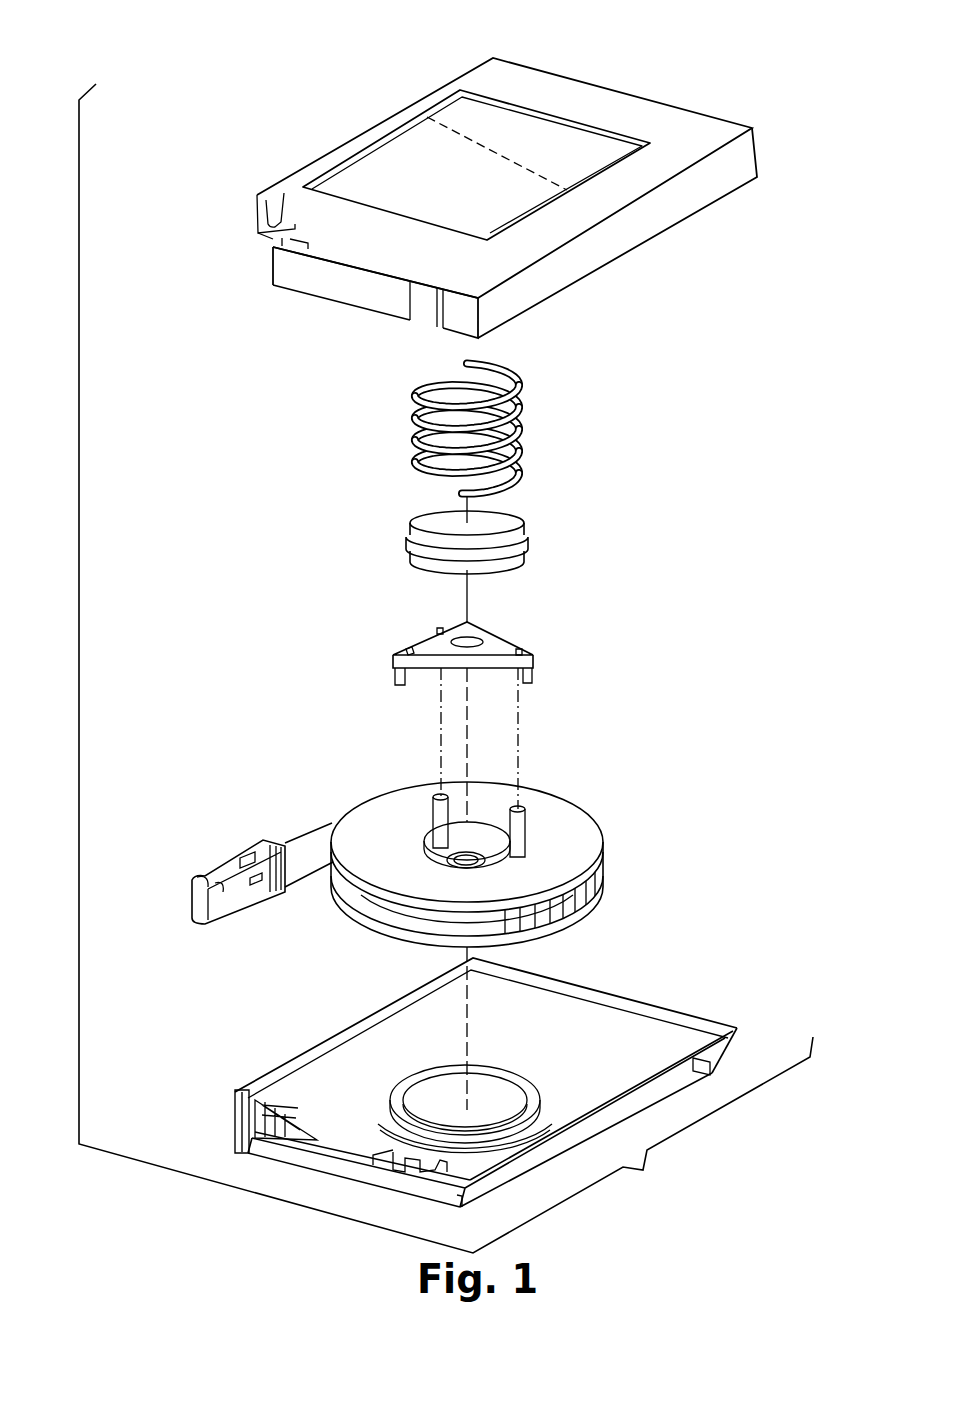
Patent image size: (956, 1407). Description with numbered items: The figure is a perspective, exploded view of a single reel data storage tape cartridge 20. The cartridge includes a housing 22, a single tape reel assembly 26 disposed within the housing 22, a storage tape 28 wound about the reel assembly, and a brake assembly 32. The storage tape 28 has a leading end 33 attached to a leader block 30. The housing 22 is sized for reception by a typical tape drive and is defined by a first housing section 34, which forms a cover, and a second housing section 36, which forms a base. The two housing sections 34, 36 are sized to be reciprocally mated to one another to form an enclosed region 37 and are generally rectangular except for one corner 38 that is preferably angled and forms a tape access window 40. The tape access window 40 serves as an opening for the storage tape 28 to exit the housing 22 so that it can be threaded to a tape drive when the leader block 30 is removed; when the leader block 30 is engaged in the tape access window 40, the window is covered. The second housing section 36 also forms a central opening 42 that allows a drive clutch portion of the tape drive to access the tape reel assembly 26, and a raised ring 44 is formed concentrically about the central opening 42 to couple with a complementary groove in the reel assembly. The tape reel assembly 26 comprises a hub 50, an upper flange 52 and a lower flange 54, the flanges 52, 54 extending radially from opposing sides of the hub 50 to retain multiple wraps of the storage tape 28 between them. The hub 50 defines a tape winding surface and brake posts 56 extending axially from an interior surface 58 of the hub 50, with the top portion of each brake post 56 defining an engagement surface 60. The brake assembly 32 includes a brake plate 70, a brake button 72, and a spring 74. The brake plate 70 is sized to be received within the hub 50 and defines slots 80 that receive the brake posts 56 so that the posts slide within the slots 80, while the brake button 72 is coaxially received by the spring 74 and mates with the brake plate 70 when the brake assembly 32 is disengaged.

The single reel data storage tape cartridge 20 is at (705, 78).
The housing 22 is at (727, 110).
The single tape reel assembly 26 is at (460, 825).
The storage tape 28 is at (312, 845).
The leader block 30 is at (212, 852).
The brake assembly 32 is at (519, 523).
The leading end 33 is at (297, 860).
The first housing section 34 is at (473, 172).
The second housing section 36 is at (450, 1072).
The enclosed region 37 is at (568, 1028).
The corner 38 is at (257, 230).
The tape access window 40 is at (232, 1120).
The central opening 42 is at (490, 1078).
The raised ring 44 is at (523, 1097).
The hub 50 is at (496, 825).
The upper flange 52 is at (587, 833).
The lower flange 54 is at (592, 880).
The brake posts 56 is at (433, 817).
The interior surface 58 is at (473, 822).
The engagement surface 60 is at (440, 797).
The brake plate 70 is at (460, 634).
The brake button 72 is at (505, 520).
The spring 74 is at (515, 418).
The slots 80 is at (440, 627).